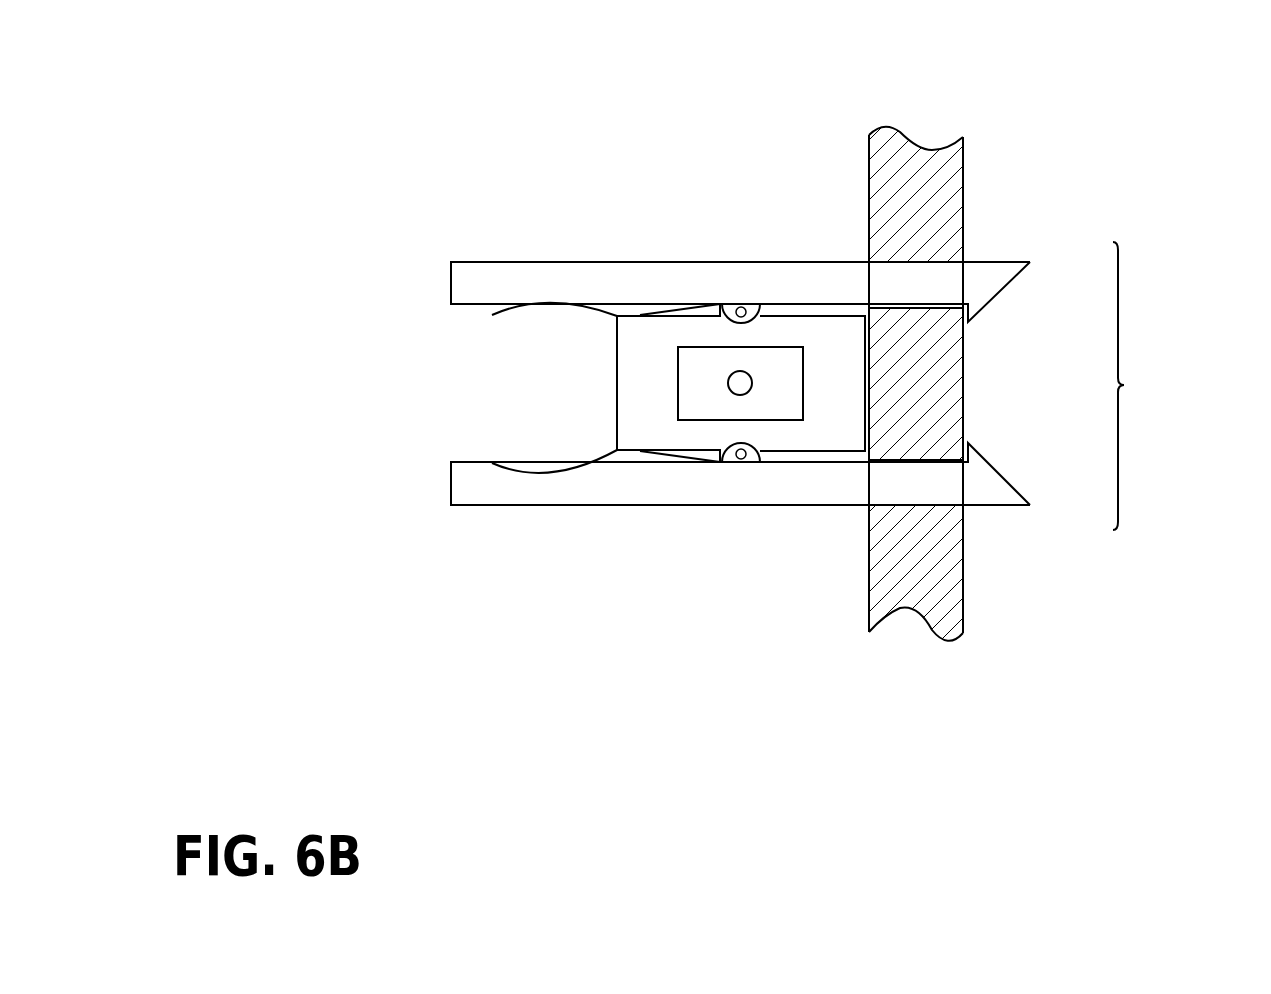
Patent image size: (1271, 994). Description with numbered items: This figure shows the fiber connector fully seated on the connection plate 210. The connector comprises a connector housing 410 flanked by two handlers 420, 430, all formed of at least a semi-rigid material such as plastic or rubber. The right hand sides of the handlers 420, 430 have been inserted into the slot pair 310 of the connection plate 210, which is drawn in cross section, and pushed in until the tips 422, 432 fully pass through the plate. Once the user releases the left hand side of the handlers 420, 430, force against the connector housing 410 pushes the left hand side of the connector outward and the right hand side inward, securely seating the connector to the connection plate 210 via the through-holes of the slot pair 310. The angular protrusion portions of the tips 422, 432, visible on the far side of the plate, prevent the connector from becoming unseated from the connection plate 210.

The connection plate 210 is at (910, 132).
The handler 420 is at (700, 261).
The handler 430 is at (697, 507).
The connector housing 410 is at (617, 380).
The tip 422 is at (990, 307).
The tip 432 is at (990, 462).
The slot pair 310 is at (1172, 386).